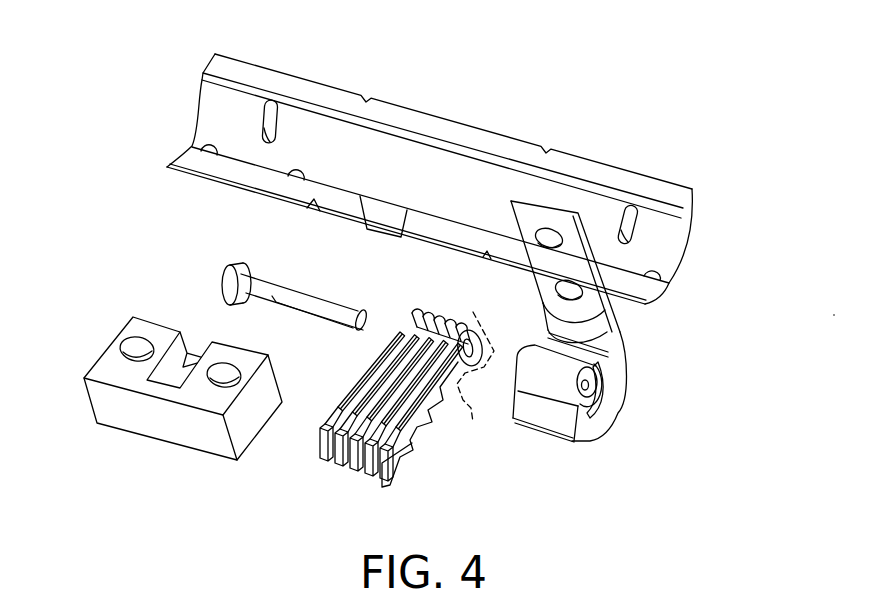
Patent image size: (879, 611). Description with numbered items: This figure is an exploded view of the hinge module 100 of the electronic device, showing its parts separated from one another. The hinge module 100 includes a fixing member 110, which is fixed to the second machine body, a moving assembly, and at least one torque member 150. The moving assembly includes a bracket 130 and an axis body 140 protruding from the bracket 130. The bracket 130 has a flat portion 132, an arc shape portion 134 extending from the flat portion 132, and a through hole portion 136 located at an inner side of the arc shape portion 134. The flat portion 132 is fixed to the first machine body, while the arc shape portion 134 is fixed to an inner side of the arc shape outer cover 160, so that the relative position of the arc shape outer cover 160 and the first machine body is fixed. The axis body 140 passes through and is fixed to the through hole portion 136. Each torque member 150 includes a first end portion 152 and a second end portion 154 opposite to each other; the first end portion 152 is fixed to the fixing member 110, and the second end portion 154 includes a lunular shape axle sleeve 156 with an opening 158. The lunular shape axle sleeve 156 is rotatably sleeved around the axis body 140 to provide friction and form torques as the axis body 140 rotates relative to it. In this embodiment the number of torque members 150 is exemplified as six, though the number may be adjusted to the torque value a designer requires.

The hinge module 100 is at (117, 78).
The fixing member 110 is at (165, 427).
The bracket 130 is at (741, 333).
The flat portion 132 is at (608, 312).
The arc shape portion 134 is at (610, 410).
The through hole portion 136 is at (590, 382).
The axis body 140 is at (290, 294).
The torque member 150 is at (436, 438).
The first end portion 152 is at (410, 467).
The second end portion 154 is at (430, 420).
The lunular shape axle sleeve 156 is at (480, 340).
The opening 158 is at (455, 336).
The arc shape outer cover 160 is at (327, 95).